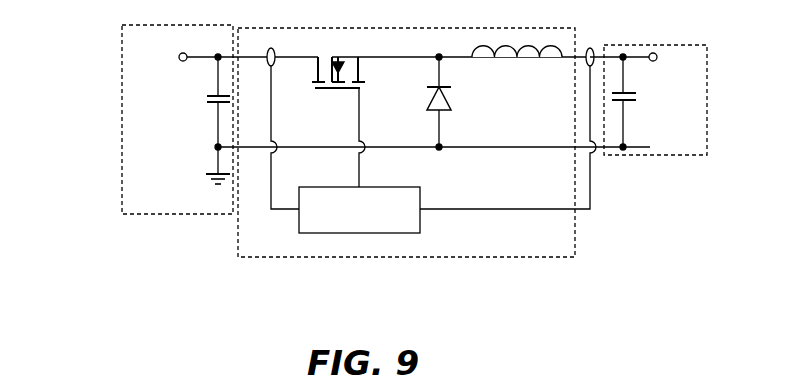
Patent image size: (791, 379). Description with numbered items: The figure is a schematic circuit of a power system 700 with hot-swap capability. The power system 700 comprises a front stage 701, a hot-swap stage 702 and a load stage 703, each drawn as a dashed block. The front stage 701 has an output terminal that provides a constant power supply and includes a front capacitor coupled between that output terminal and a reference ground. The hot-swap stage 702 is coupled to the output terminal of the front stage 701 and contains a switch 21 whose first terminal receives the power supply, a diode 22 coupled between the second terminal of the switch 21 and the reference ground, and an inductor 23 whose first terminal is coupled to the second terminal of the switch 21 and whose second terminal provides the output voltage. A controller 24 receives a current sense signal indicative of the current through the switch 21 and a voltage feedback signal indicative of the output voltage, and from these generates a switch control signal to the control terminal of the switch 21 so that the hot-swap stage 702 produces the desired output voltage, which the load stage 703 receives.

The power system 700 is at (113, 45).
The front stage 701 is at (177, 200).
The hot-swap stage 702 is at (552, 246).
The load stage 703 is at (697, 150).
The switch 21 is at (340, 92).
The diode 22 is at (458, 96).
The inductor 23 is at (516, 132).
The controller 24 is at (427, 184).